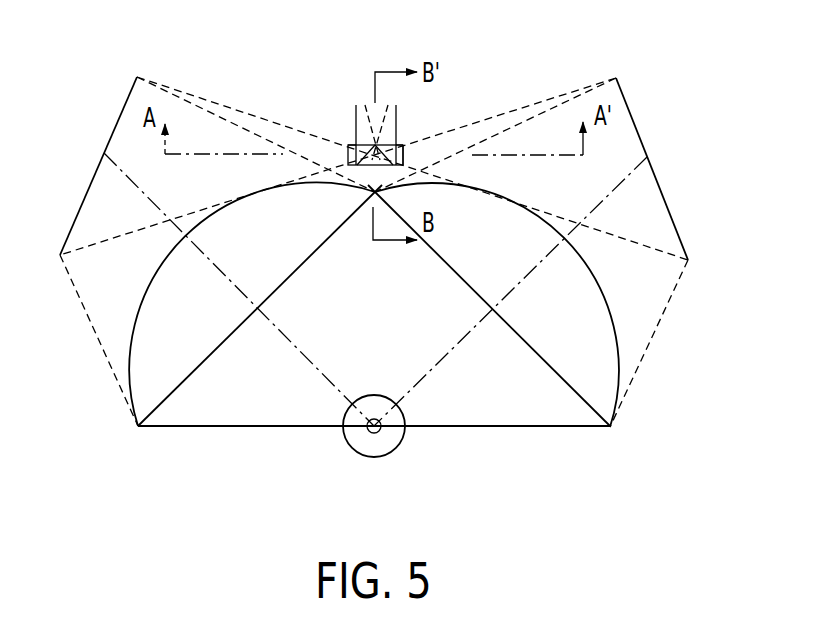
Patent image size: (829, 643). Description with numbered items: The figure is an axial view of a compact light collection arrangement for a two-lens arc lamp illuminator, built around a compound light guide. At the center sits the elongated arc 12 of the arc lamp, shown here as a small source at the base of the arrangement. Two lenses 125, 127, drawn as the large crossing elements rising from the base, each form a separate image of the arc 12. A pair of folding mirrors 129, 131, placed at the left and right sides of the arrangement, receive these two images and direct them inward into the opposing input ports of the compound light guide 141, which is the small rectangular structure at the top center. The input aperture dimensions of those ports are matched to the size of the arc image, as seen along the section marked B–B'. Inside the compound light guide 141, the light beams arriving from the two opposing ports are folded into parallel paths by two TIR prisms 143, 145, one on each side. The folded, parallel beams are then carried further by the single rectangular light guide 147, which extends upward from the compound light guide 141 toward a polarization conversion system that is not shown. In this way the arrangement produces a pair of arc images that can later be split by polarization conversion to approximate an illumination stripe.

The arc 12 is at (382, 430).
The lens 125 is at (602, 360).
The lens 127 is at (148, 373).
The folding mirror 129 is at (693, 228).
The folding mirror 131 is at (120, 113).
The compound light guide 141 is at (342, 108).
The TIR prism 143 is at (407, 155).
The TIR prism 145 is at (362, 143).
The rectangular light guide 147 is at (387, 142).